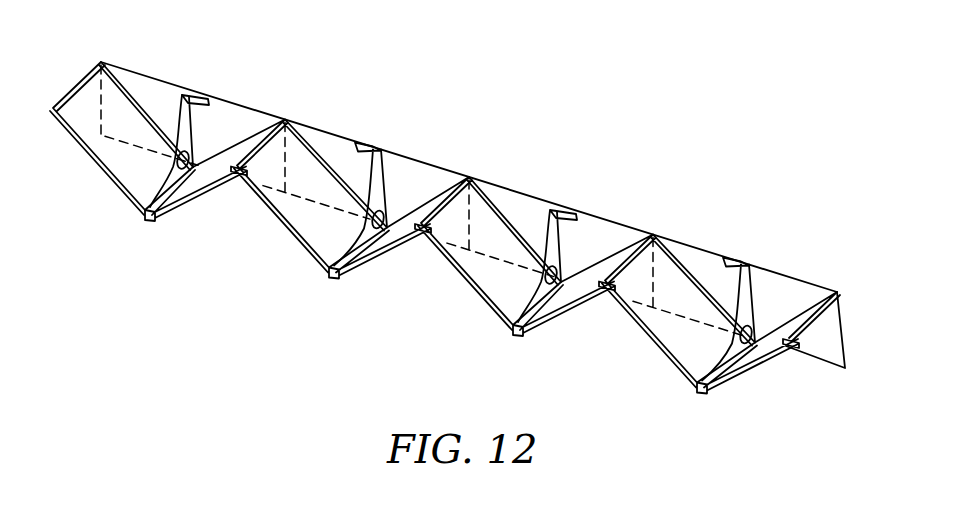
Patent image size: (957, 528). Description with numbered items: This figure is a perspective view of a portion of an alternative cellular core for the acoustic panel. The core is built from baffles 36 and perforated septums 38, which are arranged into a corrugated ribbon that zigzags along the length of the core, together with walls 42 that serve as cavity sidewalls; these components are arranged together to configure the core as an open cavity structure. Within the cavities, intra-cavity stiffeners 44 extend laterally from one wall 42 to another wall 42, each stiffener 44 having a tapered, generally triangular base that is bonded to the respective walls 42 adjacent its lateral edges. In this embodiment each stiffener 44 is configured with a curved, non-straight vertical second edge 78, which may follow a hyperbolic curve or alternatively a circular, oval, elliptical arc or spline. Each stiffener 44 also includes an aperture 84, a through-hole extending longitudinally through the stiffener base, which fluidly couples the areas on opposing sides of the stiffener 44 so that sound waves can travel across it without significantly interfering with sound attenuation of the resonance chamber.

The baffle 36 is at (173, 212).
The perforated septum 38 is at (93, 155).
The wall 42 is at (848, 333).
The stiffener 44 is at (201, 137).
The vertical second edge 78 is at (178, 131).
The aperture 84 is at (194, 169).